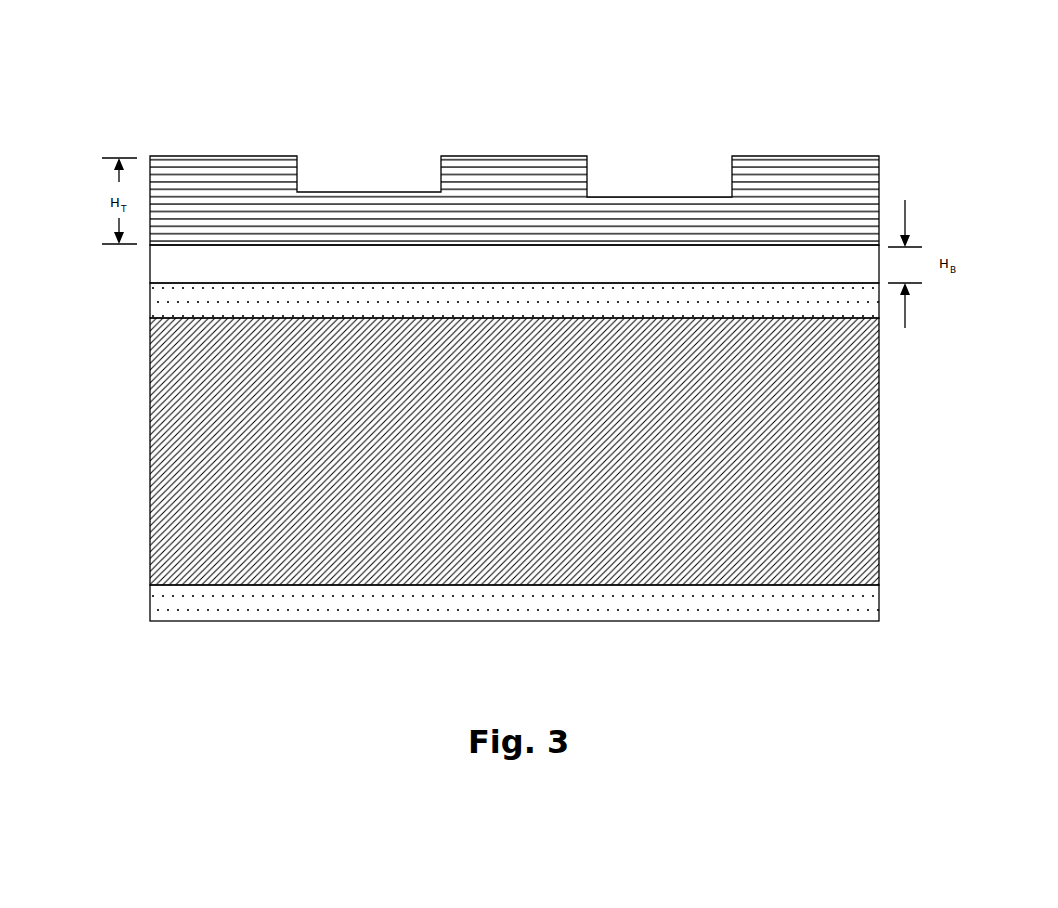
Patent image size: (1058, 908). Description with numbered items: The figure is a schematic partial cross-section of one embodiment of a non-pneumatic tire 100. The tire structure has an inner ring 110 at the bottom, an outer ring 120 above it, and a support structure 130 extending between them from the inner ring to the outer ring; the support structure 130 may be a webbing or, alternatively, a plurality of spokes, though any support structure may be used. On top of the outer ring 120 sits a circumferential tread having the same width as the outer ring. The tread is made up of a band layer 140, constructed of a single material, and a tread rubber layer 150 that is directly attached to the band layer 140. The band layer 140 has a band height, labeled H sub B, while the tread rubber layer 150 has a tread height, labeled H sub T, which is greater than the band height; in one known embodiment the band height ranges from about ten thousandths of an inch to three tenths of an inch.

The non-pneumatic tire 100 is at (128, 80).
The inner ring 110 is at (170, 603).
The outer ring 120 is at (169, 304).
The support structure 130 is at (175, 425).
The band layer 140 is at (809, 262).
The tread rubber layer 150 is at (787, 185).